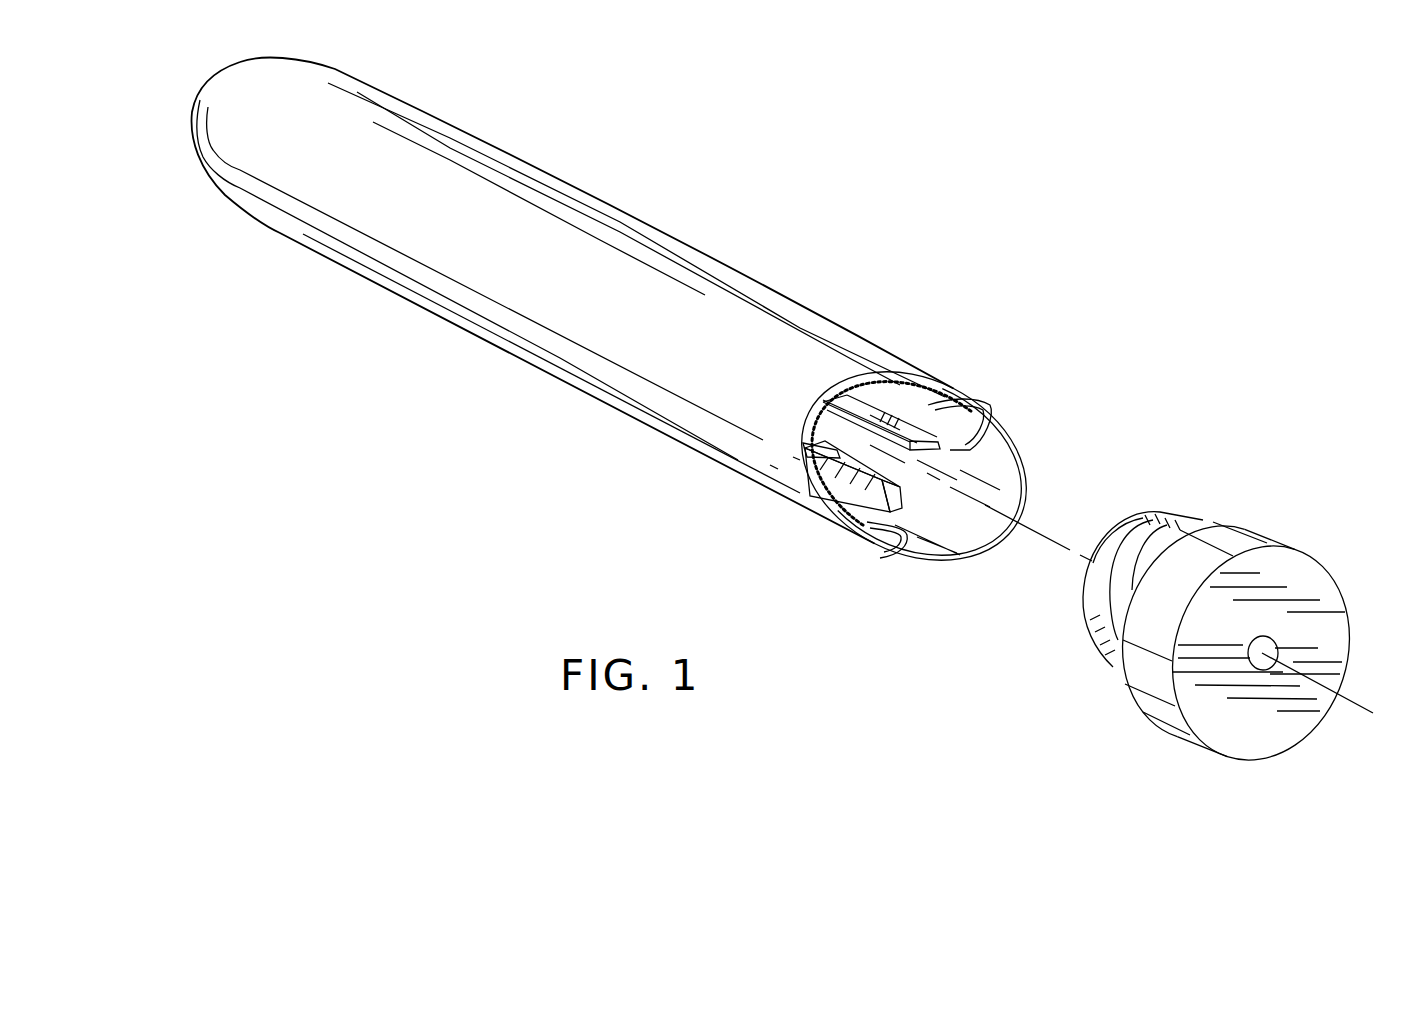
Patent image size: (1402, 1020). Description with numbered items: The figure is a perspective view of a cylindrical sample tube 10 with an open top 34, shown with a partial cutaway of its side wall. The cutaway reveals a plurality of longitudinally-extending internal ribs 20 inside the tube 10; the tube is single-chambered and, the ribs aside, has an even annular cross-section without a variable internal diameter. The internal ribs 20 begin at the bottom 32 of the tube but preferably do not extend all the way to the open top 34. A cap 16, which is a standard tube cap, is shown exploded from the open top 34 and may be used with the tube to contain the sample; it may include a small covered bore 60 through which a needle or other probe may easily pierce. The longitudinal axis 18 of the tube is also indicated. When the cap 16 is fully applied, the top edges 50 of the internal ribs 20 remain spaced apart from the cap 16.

The sample tube 10 is at (820, 200).
The cap 16 is at (1255, 747).
The longitudinal axis 18 is at (1353, 706).
The internal ribs 20 is at (842, 392).
The bottom 32 is at (165, 75).
The open top 34 is at (1008, 581).
The top edges 50 is at (977, 400).
The covered bore 60 is at (1278, 650).